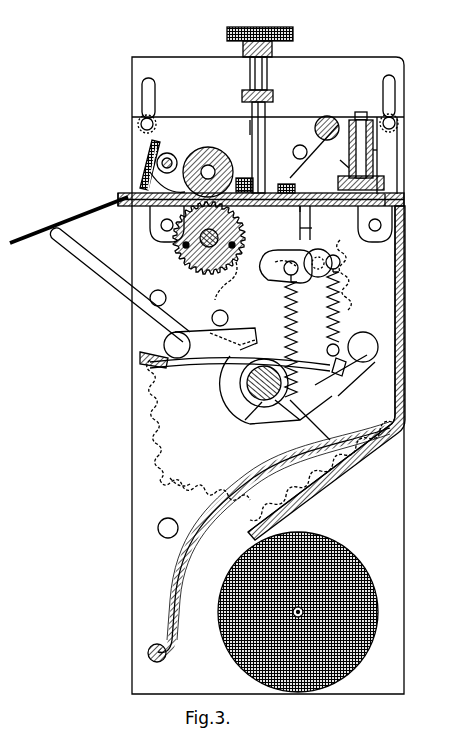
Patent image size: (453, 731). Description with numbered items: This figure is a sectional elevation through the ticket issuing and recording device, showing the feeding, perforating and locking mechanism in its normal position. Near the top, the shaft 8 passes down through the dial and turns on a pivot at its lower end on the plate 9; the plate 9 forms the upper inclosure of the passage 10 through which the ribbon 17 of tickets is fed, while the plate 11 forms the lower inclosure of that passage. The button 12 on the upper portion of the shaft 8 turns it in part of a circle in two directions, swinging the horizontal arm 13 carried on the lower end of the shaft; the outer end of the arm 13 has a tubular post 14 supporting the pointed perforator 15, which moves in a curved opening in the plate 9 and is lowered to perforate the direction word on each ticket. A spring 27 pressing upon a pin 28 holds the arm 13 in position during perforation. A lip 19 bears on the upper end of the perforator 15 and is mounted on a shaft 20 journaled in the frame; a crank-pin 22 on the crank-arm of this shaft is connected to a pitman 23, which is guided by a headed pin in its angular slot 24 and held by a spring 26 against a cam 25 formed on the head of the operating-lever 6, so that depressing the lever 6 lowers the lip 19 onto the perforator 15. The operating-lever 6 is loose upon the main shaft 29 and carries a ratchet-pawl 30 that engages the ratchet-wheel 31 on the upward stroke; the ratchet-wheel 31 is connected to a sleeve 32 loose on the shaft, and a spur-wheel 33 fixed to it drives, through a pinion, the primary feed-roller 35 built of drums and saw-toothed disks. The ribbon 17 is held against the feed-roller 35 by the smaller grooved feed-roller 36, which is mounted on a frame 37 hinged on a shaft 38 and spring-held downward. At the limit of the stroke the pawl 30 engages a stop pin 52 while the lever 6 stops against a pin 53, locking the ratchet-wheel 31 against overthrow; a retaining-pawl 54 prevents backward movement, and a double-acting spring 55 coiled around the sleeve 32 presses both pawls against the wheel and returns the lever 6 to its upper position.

The operating-lever 6 is at (118, 300).
The shaft 8 is at (249, 126).
The plate 9 is at (140, 186).
The passage 10 is at (385, 195).
The plate 11 is at (120, 205).
The button 12 is at (227, 34).
The horizontal arm 13 is at (305, 219).
The tubular post 14 is at (378, 152).
The perforator 15 is at (397, 122).
The ribbon 17 is at (73, 200).
The lip 19 is at (355, 117).
The shaft 20 is at (318, 124).
The crank-pin 22 is at (293, 150).
The pitman 23 is at (300, 228).
The angular slot 24 is at (276, 265).
The cam 25 is at (301, 346).
The spring 26 is at (362, 332).
The spring 27 is at (296, 156).
The pin 28 is at (345, 165).
The main shaft 29 is at (240, 414).
The ratchet-pawl 30 is at (190, 331).
The ratchet-wheel 31 is at (264, 408).
The sleeve 32 is at (300, 405).
The spur-wheel 33 is at (163, 479).
The primary feed-roller 35 is at (176, 244).
The feed-roller 36 is at (208, 147).
The frame 37 is at (140, 160).
The shaft 38 is at (168, 152).
The stop pin 52 is at (229, 316).
The pin 53 is at (159, 290).
The retaining-pawl 54 is at (362, 382).
The double-acting spring 55 is at (212, 382).